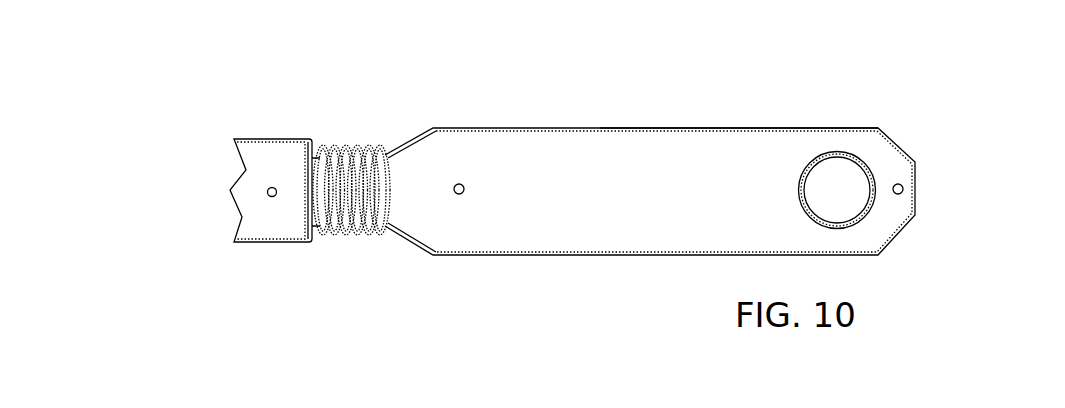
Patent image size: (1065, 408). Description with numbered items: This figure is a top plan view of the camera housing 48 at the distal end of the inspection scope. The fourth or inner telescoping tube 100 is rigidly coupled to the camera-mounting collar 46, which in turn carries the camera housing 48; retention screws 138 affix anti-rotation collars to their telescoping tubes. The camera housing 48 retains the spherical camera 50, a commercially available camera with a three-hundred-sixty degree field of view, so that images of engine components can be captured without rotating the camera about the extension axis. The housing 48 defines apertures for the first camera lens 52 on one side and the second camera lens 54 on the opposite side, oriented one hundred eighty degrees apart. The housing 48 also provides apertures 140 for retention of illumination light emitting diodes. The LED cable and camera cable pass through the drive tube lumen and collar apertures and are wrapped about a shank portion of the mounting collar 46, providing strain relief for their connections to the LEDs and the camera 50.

The fourth telescoping tube 100 is at (267, 157).
The retention screws 138 is at (266, 197).
The camera-mounting collar 46 is at (316, 160).
The camera housing 48 is at (710, 219).
The spherical camera 50 is at (743, 199).
The second camera lens 54 is at (813, 127).
The first camera lens 52 is at (842, 177).
The apertures for illumination LEDs 140 is at (498, 127).